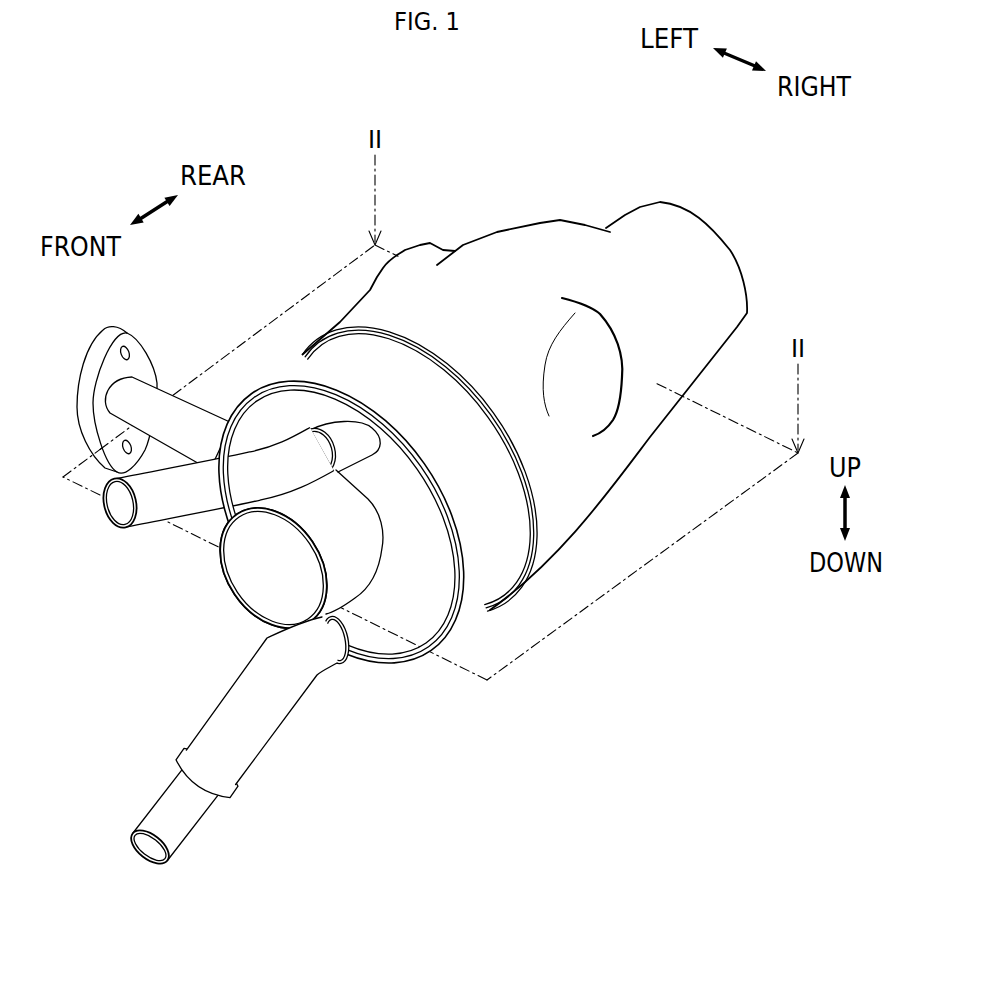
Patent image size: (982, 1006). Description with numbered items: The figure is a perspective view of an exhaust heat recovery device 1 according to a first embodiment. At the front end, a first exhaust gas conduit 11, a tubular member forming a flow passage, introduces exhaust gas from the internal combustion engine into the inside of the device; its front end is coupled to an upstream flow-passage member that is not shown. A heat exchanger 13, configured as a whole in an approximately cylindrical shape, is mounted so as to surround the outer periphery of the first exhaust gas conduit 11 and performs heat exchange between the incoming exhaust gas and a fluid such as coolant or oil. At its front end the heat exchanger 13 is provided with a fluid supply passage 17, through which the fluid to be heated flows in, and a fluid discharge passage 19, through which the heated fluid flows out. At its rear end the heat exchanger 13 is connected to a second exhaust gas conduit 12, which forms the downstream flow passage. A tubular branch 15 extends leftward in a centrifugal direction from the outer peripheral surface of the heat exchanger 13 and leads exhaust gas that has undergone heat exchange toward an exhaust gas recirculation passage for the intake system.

The exhaust heat recovery device 1 is at (585, 158).
The first exhaust gas conduit 11 is at (258, 602).
The second exhaust gas conduit 12 is at (643, 445).
The heat exchanger 13 is at (473, 588).
The branch 15 is at (165, 396).
The fluid supply passage 17 is at (263, 725).
The fluid discharge passage 19 is at (120, 513).